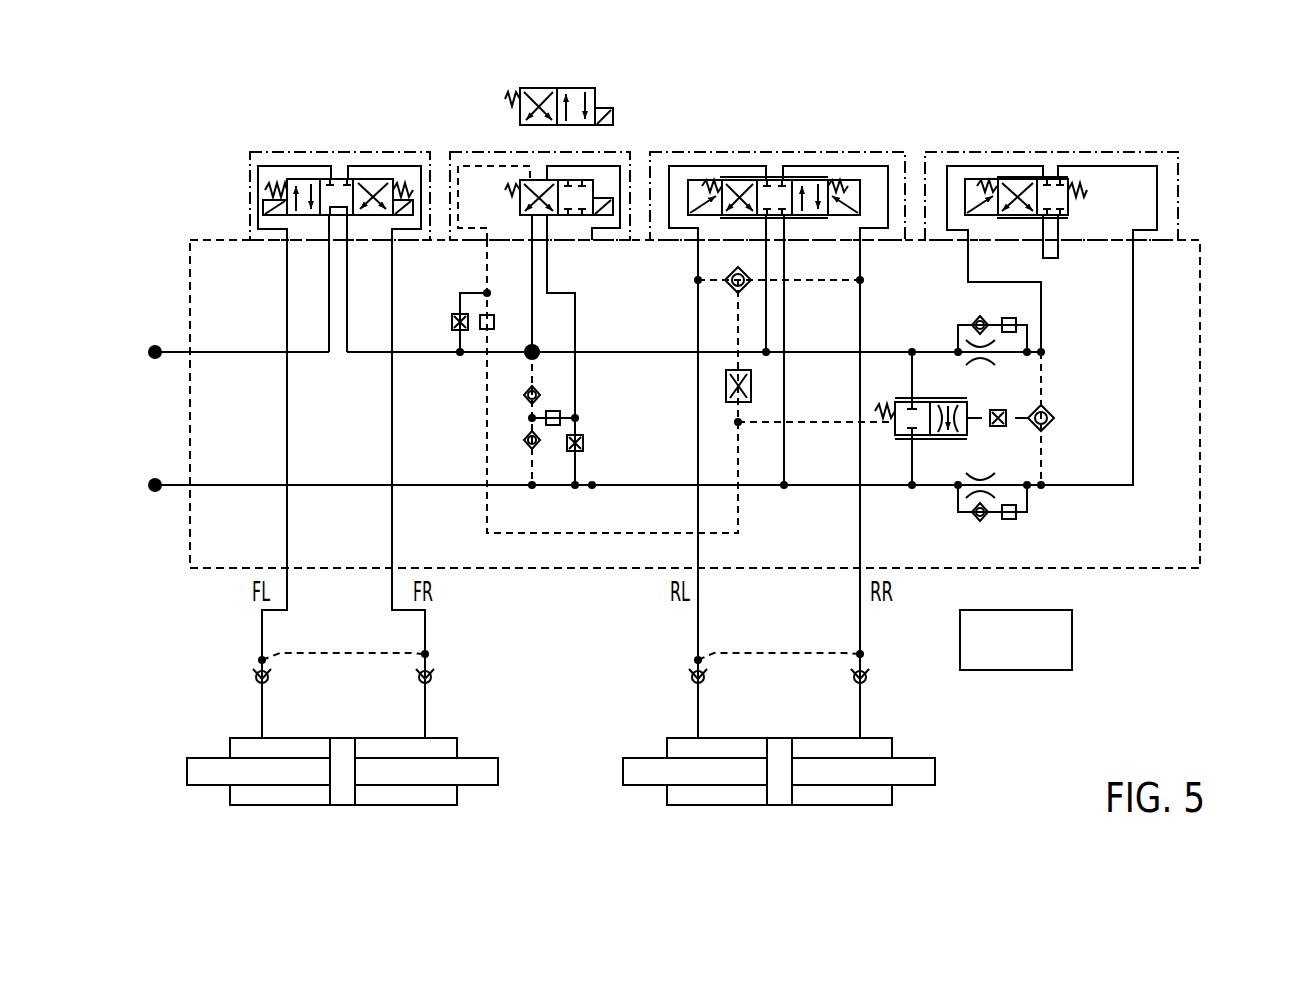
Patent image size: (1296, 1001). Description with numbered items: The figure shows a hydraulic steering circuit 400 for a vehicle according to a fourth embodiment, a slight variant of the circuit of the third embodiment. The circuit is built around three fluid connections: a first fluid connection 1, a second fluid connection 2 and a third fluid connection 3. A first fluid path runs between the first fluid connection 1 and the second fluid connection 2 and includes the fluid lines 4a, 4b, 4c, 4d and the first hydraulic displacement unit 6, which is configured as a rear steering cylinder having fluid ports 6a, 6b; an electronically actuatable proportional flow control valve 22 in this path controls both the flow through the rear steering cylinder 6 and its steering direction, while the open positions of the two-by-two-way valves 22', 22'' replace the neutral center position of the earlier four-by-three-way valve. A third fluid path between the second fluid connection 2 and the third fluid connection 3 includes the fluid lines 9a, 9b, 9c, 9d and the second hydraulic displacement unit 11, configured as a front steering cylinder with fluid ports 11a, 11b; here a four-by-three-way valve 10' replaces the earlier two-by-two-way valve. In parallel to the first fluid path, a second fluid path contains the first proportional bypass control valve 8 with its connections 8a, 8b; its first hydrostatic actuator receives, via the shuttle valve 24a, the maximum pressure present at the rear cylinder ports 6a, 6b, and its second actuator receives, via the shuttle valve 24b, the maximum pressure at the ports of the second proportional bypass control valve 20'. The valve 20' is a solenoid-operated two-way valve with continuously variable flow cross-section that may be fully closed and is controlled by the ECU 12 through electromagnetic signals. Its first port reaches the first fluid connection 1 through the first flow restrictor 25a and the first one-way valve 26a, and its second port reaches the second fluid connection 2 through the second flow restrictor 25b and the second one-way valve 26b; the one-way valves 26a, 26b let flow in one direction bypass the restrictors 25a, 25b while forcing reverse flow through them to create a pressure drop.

The hydraulic steering circuit 400 is at (1205, 125).
The 4/3-way valve 10' is at (312, 147).
The 2/2-way valve 22'' is at (592, 66).
The 2/2-way valve 22' is at (561, 161).
The proportional flow control valve 22 is at (777, 153).
The second proportional bypass control valve 20' is at (1051, 170).
The third fluid connection 3 is at (155, 352).
The first fluid connection 1 is at (155, 485).
The second fluid connection 2 is at (530, 355).
The fluid line 9a is at (347, 302).
The fluid line 9b is at (220, 352).
The fluid line 9c is at (287, 423).
The fluid line 9d is at (392, 423).
The shuttle valve 24a is at (723, 290).
The shuttle valve 24b is at (1060, 418).
The fluid line 4a is at (784, 397).
The fluid line 4b is at (766, 330).
The fluid line 4c is at (697, 633).
The fluid line 4d is at (860, 633).
The first proportional bypass control valve 8 is at (942, 382).
The port of the first proportional bypass control valve 8a is at (900, 443).
The port of the first proportional bypass control valve 8b is at (900, 396).
The first one-way valve 26a is at (965, 523).
The second one-way valve 26b is at (993, 310).
The first flow restrictor 25a is at (998, 470).
The second flow restrictor 25b is at (1008, 362).
The second hydraulic displacement unit 11 is at (468, 795).
The fluid port of the front steering cylinder 11a is at (262, 738).
The fluid port of the front steering cylinder 11b is at (425, 738).
The first hydraulic displacement unit 6 is at (902, 795).
The fluid port of the rear steering cylinder 6a is at (697, 738).
The fluid port of the rear steering cylinder 6b is at (860, 738).
The ECU 12 is at (1072, 648).